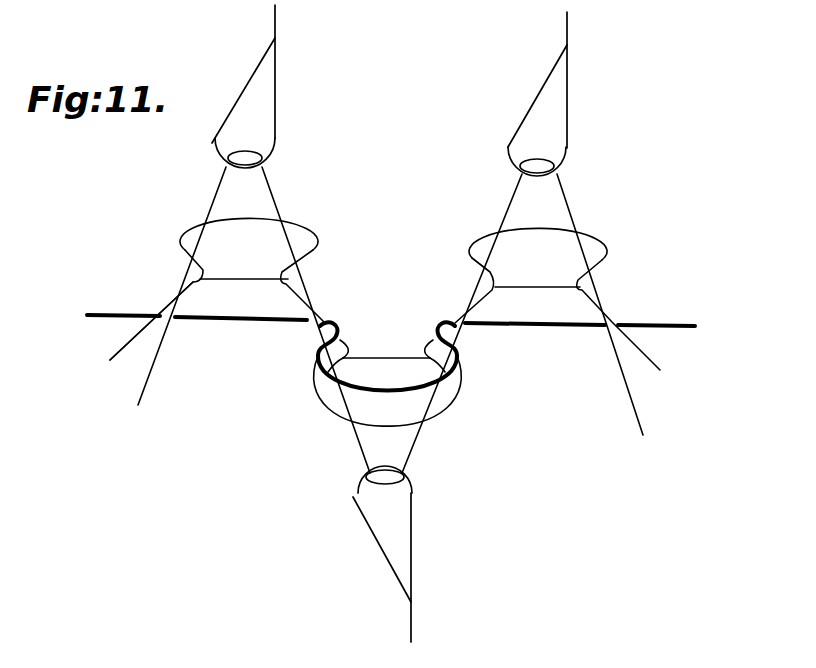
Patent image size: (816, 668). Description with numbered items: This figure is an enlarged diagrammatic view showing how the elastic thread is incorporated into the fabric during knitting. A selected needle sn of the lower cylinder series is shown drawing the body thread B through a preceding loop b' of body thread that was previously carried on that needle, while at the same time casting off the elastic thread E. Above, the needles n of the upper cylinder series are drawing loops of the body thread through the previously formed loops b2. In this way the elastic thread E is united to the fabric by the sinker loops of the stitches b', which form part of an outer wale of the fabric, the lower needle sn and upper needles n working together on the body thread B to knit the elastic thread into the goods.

The needle of the upper cylinder series n is at (276, 82).
The selected needle of the lower cylinder series sn is at (412, 522).
The elastic thread E is at (244, 323).
The previously formed loops b2 is at (308, 235).
The preceding loop of body thread b' is at (399, 374).
The body thread B is at (147, 370).